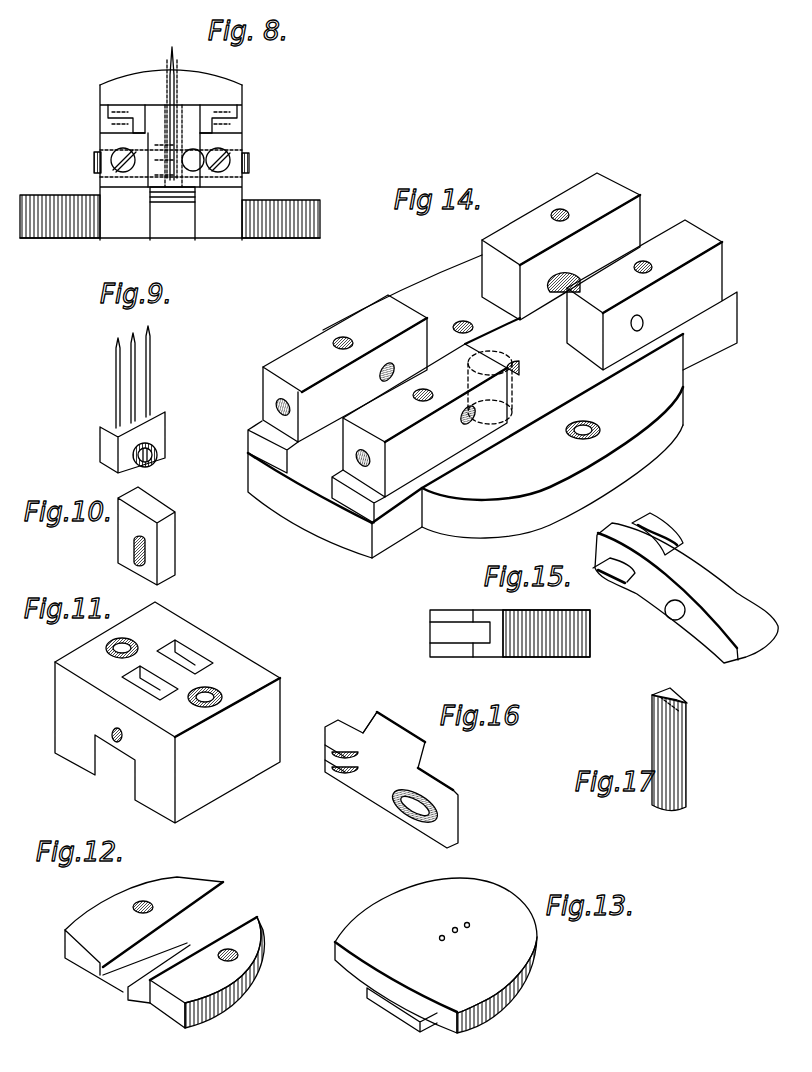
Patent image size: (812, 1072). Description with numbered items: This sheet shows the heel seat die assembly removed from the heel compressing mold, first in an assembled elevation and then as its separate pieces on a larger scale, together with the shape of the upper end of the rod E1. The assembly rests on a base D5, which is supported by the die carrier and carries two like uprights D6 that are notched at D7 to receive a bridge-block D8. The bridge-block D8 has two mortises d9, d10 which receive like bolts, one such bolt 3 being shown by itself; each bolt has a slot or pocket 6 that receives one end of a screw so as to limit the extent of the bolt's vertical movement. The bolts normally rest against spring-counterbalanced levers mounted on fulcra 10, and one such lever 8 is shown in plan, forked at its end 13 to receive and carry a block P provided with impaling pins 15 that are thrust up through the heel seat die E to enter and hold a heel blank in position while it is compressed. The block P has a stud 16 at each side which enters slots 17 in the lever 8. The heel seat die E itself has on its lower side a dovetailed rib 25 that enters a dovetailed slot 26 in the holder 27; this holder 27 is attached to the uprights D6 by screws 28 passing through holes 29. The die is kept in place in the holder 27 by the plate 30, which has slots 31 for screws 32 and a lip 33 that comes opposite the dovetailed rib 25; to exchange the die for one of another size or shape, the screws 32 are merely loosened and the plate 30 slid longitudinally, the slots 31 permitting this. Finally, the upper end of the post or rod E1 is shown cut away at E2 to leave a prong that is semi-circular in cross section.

In FIG. 8, the impaling pins 15 is at (170, 58).
In FIG. 9, the impaling pins 15 is at (152, 377).
In FIG. 8, the lip 33 is at (193, 105).
In FIG. 16, the lip 33 is at (400, 725).
In FIG. 8, the heel seat die E is at (233, 90).
In FIG. 13, the heel seat die E is at (436, 955).
In FIG. 8, the dovetailed rib 25 is at (212, 113).
In FIG. 13, the dovetailed rib 25 is at (390, 1012).
In FIG. 8, the holder 27 is at (240, 123).
In FIG. 12, the holder 27 is at (240, 1000).
In FIG. 8, the screws 28 is at (118, 123).
In FIG. 8, the plate 30 is at (103, 141).
In FIG. 16, the plate 30 is at (445, 782).
In FIG. 8, the slots 31 is at (100, 160).
In FIG. 16, the slots 31 is at (335, 765).
In FIG. 8, the fulcra 10 is at (251, 162).
In FIG. 14, the fulcra 10 is at (644, 323).
In FIG. 8, the base D5 is at (302, 203).
In FIG. 14, the base D5 is at (684, 418).
In FIG. 8, the screws 32 is at (128, 150).
In FIG. 8, the lever 8 is at (172, 202).
In FIG. 15, the lever 8 is at (620, 665).
In FIG. 9, the block P is at (165, 425).
In FIG. 9, the stud 16 is at (158, 453).
In FIG. 10, the bolt 3 is at (158, 506).
In FIG. 10, the slot or pocket 6 is at (134, 549).
In FIG. 11, the bridge-block D8 is at (257, 660).
In FIG. 14, the bridge-block D8 is at (574, 432).
In FIG. 11, the mortise d9 is at (187, 652).
In FIG. 11, the mortise d10 is at (123, 675).
In FIG. 12, the dovetailed slot 26 is at (226, 914).
In FIG. 12, the holes 29 is at (142, 901).
In FIG. 15, the forked end 13 is at (667, 545).
In FIG. 15, the slots 17 is at (605, 555).
In FIG. 14, the uprights D6 is at (310, 343).
In FIG. 14, the notches D7 is at (607, 408).
In FIG. 17, the rod E1 is at (681, 760).
In FIG. 17, the cut-away prong E2 is at (682, 705).